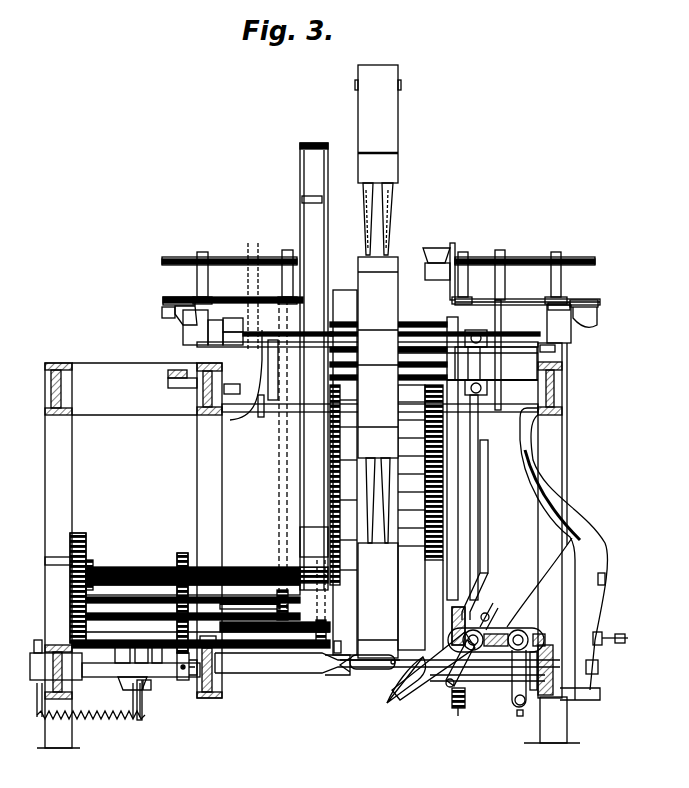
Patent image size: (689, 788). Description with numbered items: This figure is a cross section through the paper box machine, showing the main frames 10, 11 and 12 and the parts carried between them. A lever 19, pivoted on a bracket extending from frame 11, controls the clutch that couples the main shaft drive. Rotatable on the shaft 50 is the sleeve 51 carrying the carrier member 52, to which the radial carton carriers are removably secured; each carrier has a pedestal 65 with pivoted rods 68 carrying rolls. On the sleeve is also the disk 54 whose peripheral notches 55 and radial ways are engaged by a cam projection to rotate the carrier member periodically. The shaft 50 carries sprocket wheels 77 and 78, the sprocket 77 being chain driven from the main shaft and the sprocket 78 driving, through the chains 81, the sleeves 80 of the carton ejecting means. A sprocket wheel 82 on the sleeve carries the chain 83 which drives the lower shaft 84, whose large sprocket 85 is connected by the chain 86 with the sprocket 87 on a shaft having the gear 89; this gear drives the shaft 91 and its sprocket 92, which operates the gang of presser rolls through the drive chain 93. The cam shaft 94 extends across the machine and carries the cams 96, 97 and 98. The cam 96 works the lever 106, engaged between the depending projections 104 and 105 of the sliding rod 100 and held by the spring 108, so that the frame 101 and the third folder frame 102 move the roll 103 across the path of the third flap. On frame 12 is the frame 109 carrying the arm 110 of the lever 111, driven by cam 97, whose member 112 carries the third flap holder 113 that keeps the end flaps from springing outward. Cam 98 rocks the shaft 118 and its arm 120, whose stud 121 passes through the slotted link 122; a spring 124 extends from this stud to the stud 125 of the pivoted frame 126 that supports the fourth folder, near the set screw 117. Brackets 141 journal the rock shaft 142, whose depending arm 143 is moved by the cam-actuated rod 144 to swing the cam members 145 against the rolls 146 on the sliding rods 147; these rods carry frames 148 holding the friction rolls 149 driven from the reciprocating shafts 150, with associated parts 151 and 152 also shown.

The main frame 10 is at (66, 465).
The main frame 11 is at (197, 449).
The main frame 12 is at (563, 456).
The lever 19 is at (168, 374).
The shaft 50 is at (563, 357).
The sleeve 51 is at (348, 345).
The carrier member 52 is at (398, 300).
The disk 54 is at (300, 157).
The notches 55 is at (302, 198).
The pedestal 65 is at (380, 205).
The rods 68 is at (368, 215).
The sprocket wheel 77 is at (262, 395).
The sprocket wheel 78 is at (250, 412).
The sleeves 80 is at (238, 259).
The chains 81 is at (254, 298).
The sprocket wheel 82 is at (290, 340).
The chain 83 is at (282, 455).
The shaft 84 is at (237, 606).
The sprocket 85 is at (170, 590).
The chain 86 is at (176, 596).
The sprocket 87 is at (179, 560).
The gear 89 is at (86, 548).
The shaft 91 is at (242, 650).
The sprocket 92 is at (316, 626).
The drive chain 93 is at (324, 608).
The cam shaft 94 is at (268, 674).
The cam 96 is at (122, 666).
The cam 97 is at (452, 690).
The cam 98 is at (512, 690).
The rod 100 is at (300, 674).
The frame 101 is at (340, 676).
The third folder frame 102 is at (348, 678).
The roll 103 is at (430, 668).
The depending projection 104 is at (127, 690).
The depending projection 105 is at (151, 684).
The lever 106 is at (142, 696).
The spring 108 is at (100, 722).
The frame 109 is at (576, 516).
The arm 110 is at (503, 392).
The lever 111 is at (488, 508).
The member 112 is at (486, 593).
The third flap holder 113 is at (388, 702).
The set screw 117 is at (625, 638).
The shaft 118 is at (517, 707).
The arm 120 is at (553, 702).
The stud 121 is at (524, 630).
The link 122 is at (480, 631).
The spring 124 is at (462, 690).
The stud 125 is at (452, 628).
The frame 126 is at (492, 610).
The brackets 141 is at (195, 340).
The rock shaft 142 is at (246, 326).
The depending arm 143 is at (230, 420).
The rod 144 is at (224, 390).
The cam members 145 is at (178, 316).
The rolls 146 is at (162, 312).
The rods 147 is at (172, 300).
The frames 148 is at (287, 250).
The friction rolls 149 is at (428, 276).
The shafts 150 is at (197, 258).
The post 151 is at (254, 256).
The post 152 is at (505, 252).